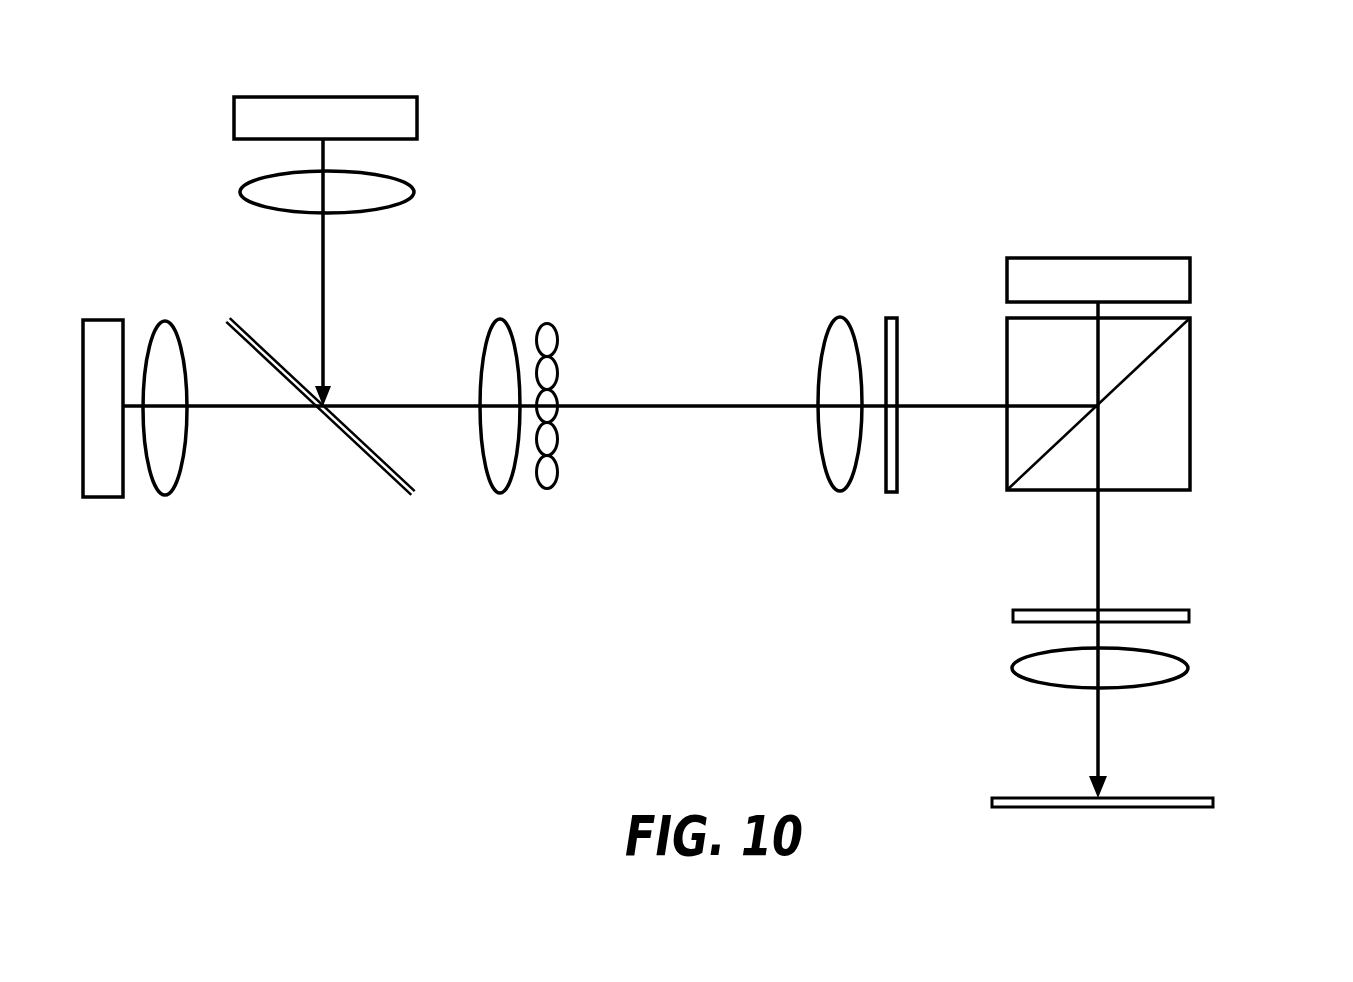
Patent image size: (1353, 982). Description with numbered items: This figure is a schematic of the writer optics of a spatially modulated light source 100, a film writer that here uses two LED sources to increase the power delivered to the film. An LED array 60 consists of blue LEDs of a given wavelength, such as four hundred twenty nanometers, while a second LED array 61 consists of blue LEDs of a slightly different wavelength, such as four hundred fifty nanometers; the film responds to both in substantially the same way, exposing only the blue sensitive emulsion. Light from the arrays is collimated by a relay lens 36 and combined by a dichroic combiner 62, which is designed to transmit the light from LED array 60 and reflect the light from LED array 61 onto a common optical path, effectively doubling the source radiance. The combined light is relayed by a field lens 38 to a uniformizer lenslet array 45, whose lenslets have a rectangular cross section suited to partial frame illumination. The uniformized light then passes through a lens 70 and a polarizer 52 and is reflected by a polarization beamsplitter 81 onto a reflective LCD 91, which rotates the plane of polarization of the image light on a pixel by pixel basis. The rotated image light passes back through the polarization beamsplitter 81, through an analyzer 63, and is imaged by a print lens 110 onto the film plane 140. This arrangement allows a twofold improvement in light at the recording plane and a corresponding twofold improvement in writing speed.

The spatially modulated light source 100 is at (1270, 150).
The LED array 60 is at (97, 320).
The relay lens 36 is at (164, 322).
The LED array 61 is at (335, 97).
The dichroic combiner 62 is at (372, 464).
The field lens 38 is at (497, 319).
The uniformizer lenslet array 45 is at (551, 323).
The lens 70 is at (839, 317).
The polarizer 52 is at (893, 318).
The reflective LCD 91 is at (1191, 274).
The polarization beamsplitter 81 is at (1192, 388).
The analyzer 63 is at (1190, 612).
The print lens 110 is at (1189, 665).
The film plane 140 is at (1213, 800).